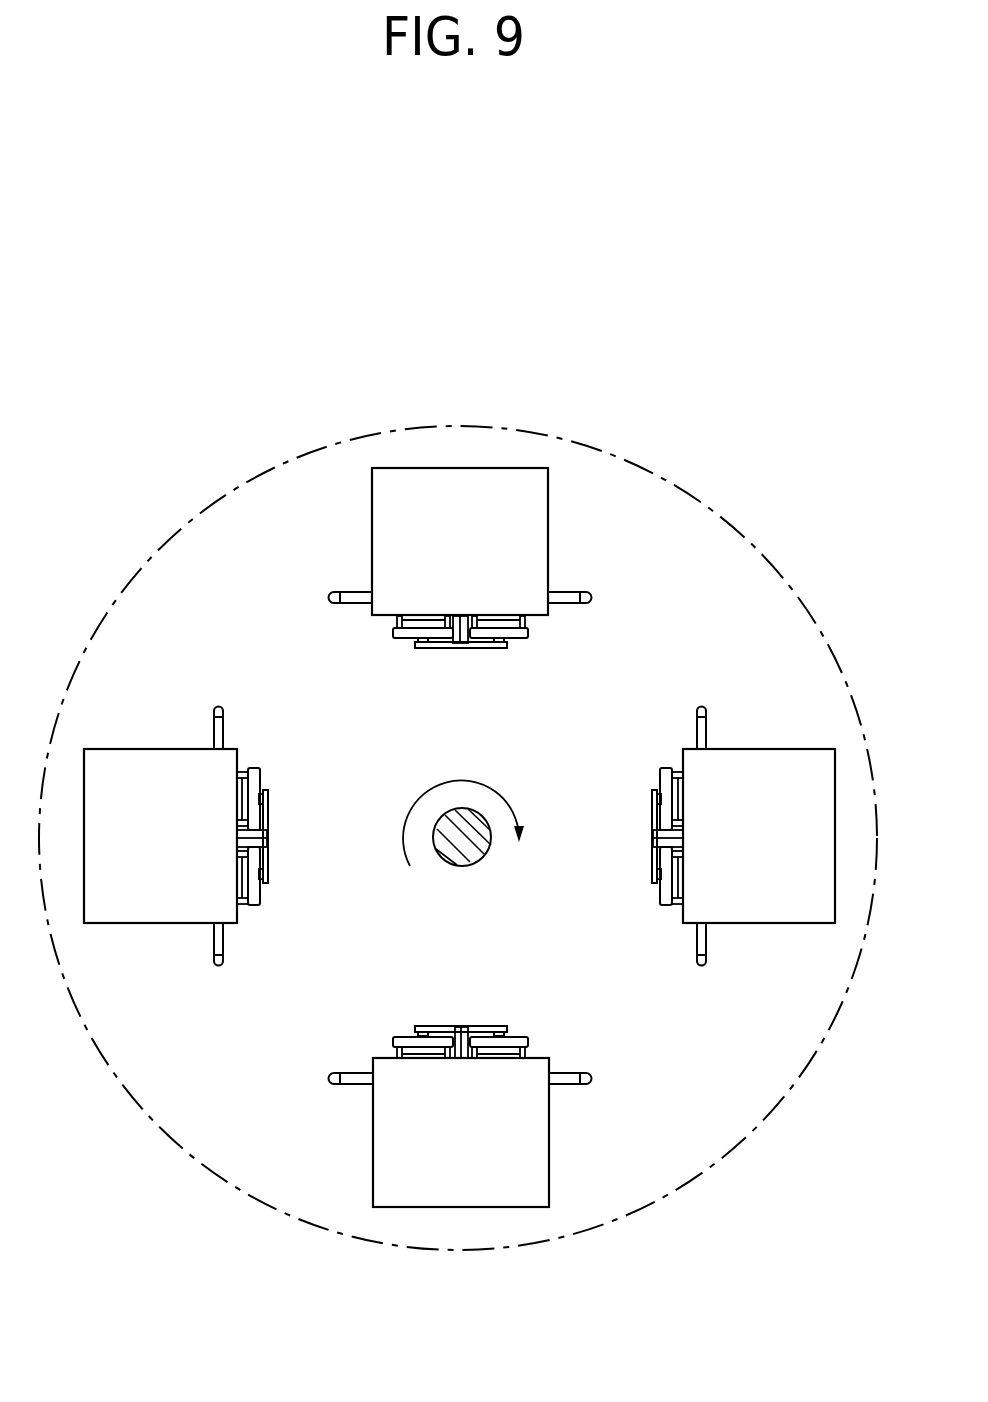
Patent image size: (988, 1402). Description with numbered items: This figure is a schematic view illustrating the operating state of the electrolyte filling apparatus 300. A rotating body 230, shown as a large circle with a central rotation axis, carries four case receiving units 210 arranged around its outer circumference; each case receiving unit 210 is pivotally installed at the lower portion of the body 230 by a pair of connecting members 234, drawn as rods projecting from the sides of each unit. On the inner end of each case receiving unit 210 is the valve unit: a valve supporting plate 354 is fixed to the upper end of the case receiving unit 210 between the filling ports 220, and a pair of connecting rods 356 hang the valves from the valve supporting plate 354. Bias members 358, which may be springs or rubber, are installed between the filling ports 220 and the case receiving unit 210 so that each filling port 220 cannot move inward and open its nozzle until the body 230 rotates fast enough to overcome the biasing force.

The apparatus 300 is at (490, 238).
The case receiving unit 210 is at (460, 468).
The filling port 220 is at (425, 622).
The body 230 is at (207, 498).
The connecting member 234 is at (569, 592).
The valve supporting plate 354 is at (460, 645).
The connecting rod 356 is at (505, 642).
The bias member 358 is at (527, 626).